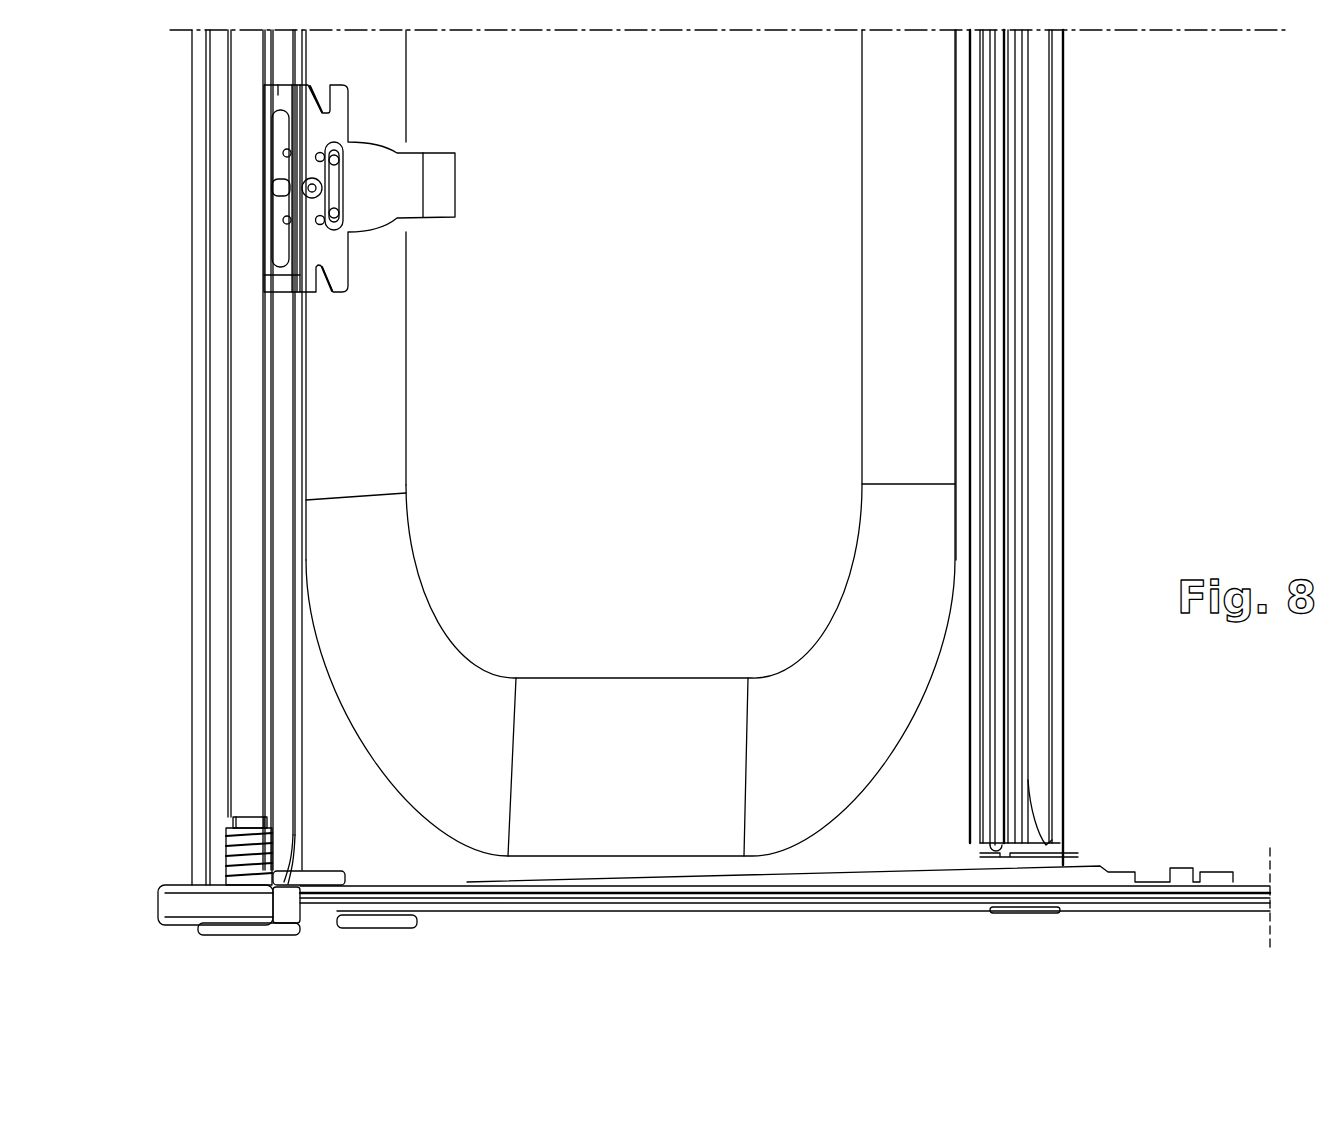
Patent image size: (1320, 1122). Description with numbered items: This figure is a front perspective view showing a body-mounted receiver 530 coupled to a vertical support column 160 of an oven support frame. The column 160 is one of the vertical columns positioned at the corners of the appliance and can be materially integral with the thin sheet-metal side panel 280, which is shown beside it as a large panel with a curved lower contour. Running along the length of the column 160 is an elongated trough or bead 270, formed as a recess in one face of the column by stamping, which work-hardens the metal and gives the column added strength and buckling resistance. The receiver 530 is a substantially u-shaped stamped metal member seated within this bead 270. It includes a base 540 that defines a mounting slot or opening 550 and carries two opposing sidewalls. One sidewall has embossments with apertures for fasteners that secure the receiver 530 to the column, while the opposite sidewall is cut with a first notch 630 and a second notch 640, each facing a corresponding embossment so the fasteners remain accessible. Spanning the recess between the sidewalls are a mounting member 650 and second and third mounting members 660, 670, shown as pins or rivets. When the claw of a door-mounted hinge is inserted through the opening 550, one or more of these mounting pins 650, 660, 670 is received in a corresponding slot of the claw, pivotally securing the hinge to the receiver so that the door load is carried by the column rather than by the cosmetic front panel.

The vertical support column 160 is at (247, 660).
The bead 270 is at (280, 603).
The side panel 280 is at (634, 354).
The body-mounted receiver 530 is at (391, 174).
The base 540 is at (280, 282).
The mounting slot or opening 550 is at (262, 111).
The first notch 630 is at (330, 117).
The second notch 640 is at (322, 260).
The mounting member 650 is at (283, 187).
The second mounting member 660 is at (285, 153).
The third mounting member 670 is at (286, 221).